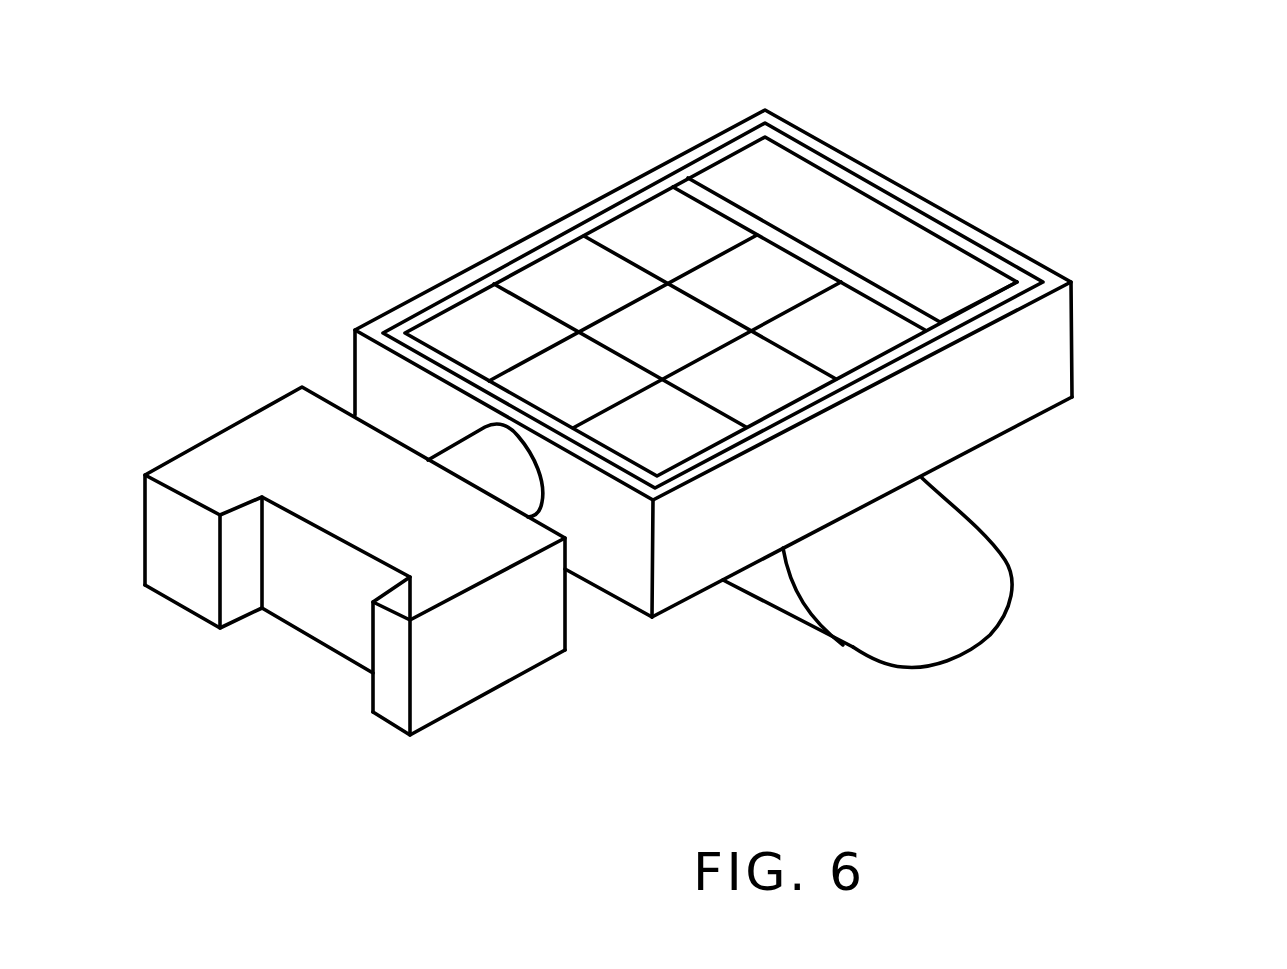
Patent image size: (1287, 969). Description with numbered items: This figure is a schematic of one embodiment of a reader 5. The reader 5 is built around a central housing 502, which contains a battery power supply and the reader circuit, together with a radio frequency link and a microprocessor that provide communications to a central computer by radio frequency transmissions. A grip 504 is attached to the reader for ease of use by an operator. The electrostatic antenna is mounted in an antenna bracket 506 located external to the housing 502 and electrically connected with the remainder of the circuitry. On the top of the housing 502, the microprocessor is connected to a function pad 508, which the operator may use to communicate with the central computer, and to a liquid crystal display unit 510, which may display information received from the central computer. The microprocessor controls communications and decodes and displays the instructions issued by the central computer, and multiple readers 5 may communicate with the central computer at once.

The reader 5 is at (686, 429).
The central housing 502 is at (1078, 351).
The grip 504 is at (1013, 580).
The antenna bracket 506 is at (445, 718).
The function pad 508 is at (655, 215).
The liquid crystal display unit 510 is at (783, 168).